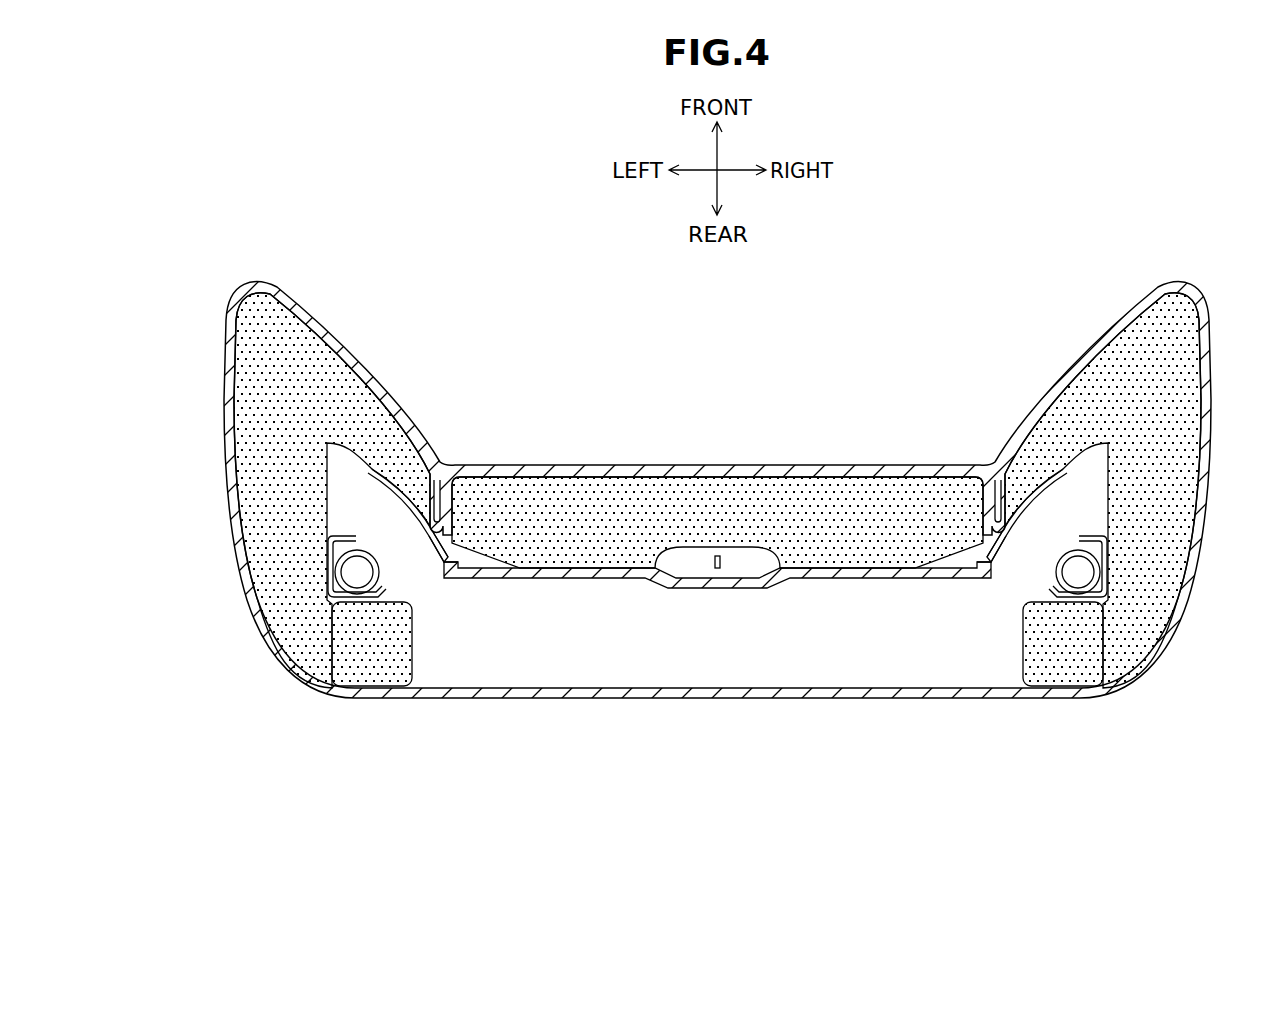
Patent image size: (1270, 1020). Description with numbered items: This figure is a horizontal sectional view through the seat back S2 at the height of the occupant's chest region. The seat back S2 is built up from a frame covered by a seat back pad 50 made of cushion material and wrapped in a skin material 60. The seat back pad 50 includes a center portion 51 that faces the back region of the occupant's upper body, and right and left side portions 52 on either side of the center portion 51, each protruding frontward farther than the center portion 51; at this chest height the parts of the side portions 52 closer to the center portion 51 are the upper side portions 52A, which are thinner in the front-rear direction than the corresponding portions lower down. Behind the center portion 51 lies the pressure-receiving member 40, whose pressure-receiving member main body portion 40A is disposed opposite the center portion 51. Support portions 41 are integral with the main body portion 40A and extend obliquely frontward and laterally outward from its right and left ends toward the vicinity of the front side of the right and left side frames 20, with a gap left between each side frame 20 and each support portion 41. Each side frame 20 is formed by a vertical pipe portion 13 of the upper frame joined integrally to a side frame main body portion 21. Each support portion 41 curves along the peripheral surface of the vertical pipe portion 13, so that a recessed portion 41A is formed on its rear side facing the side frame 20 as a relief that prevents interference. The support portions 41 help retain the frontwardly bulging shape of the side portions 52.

The seat back S2 is at (720, 503).
The vertical pipe portion 13 is at (393, 607).
The side frame 20 is at (717, 664).
The side frame main body portion 21 is at (356, 600).
The pressure-receiving member 40 is at (717, 614).
The pressure-receiving member main body portion 40A is at (748, 594).
The support portion 41 is at (390, 492).
The recessed portion 41A is at (403, 522).
The seat back pad 50 is at (717, 482).
The center portion 51 is at (790, 498).
The side portion 52 is at (717, 490).
The upper side portion 52A is at (373, 396).
The skin material 60 is at (596, 466).